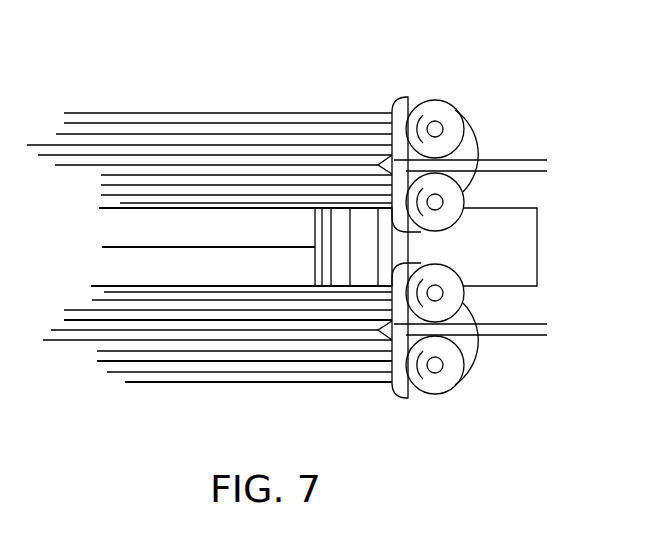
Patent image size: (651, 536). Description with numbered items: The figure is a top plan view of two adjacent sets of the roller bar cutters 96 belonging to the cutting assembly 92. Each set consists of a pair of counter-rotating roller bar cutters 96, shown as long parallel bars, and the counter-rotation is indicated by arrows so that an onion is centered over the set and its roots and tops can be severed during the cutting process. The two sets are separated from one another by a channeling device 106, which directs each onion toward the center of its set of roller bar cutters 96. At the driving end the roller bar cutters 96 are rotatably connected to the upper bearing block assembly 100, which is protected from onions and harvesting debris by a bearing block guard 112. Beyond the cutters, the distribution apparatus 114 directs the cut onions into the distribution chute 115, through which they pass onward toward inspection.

The cutting assembly 92 is at (55, 130).
The roller bar cutters 96 is at (170, 135).
The upper bearing block assembly 100 is at (452, 118).
The channeling device 106 is at (140, 273).
The bearing block guard 112 is at (398, 97).
The distribution apparatus 114 is at (390, 160).
The distribution chute 115 is at (522, 248).